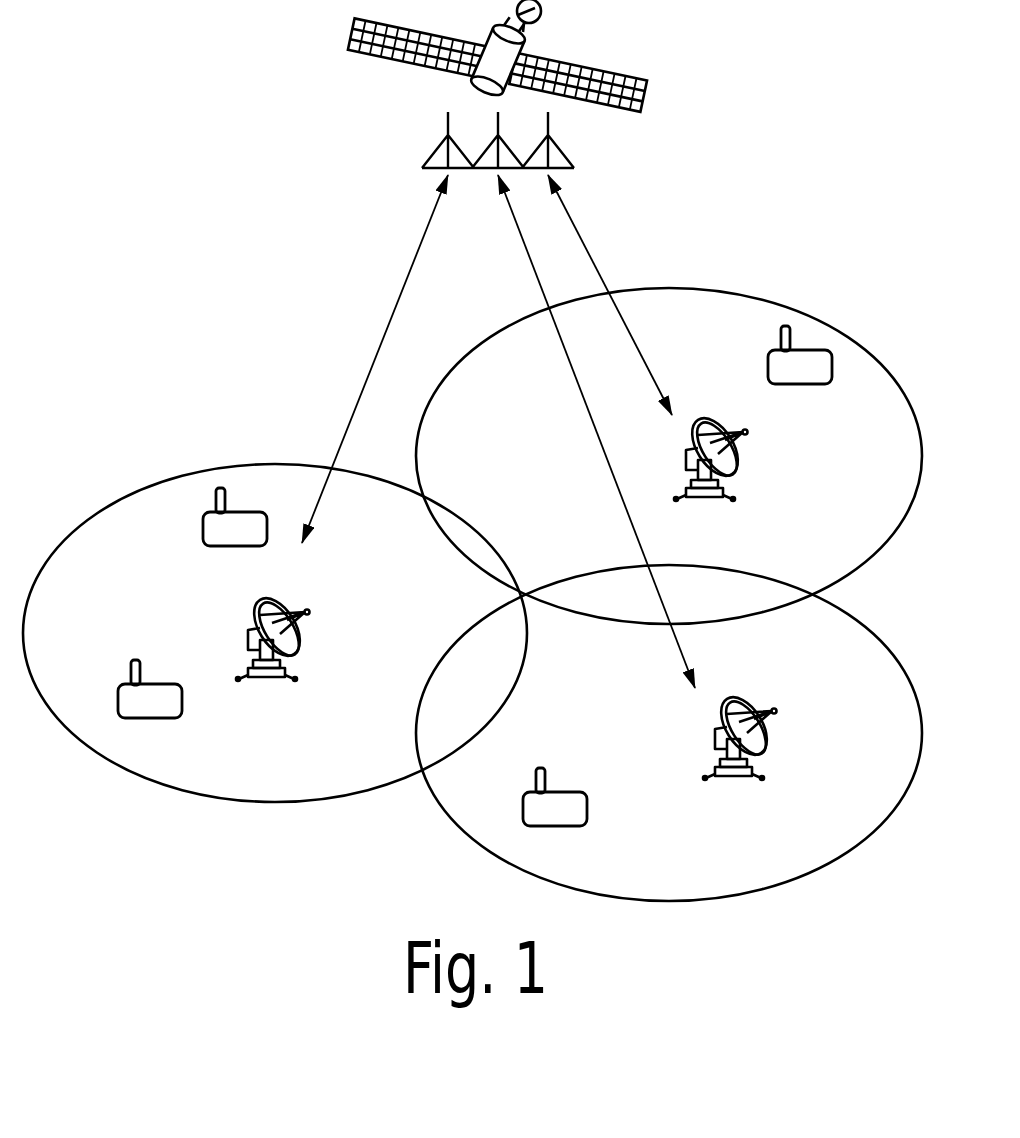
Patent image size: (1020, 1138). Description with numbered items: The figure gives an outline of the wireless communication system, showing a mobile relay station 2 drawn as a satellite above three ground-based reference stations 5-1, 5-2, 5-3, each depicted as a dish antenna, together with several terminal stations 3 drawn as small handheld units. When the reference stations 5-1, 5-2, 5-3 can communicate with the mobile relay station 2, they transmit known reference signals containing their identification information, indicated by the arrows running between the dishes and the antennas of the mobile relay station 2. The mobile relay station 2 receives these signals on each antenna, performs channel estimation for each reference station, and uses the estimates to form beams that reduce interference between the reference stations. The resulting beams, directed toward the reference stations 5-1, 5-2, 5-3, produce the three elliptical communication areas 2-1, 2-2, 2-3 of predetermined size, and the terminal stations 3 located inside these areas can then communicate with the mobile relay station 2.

The mobile relay station 2 is at (583, 63).
The communication area 2-1 is at (160, 480).
The communication area 2-2 is at (666, 288).
The communication area 2-3 is at (886, 641).
The terminal station 3 is at (241, 512).
The reference station 5-1 is at (297, 645).
The reference station 5-2 is at (735, 468).
The reference station 5-3 is at (742, 698).